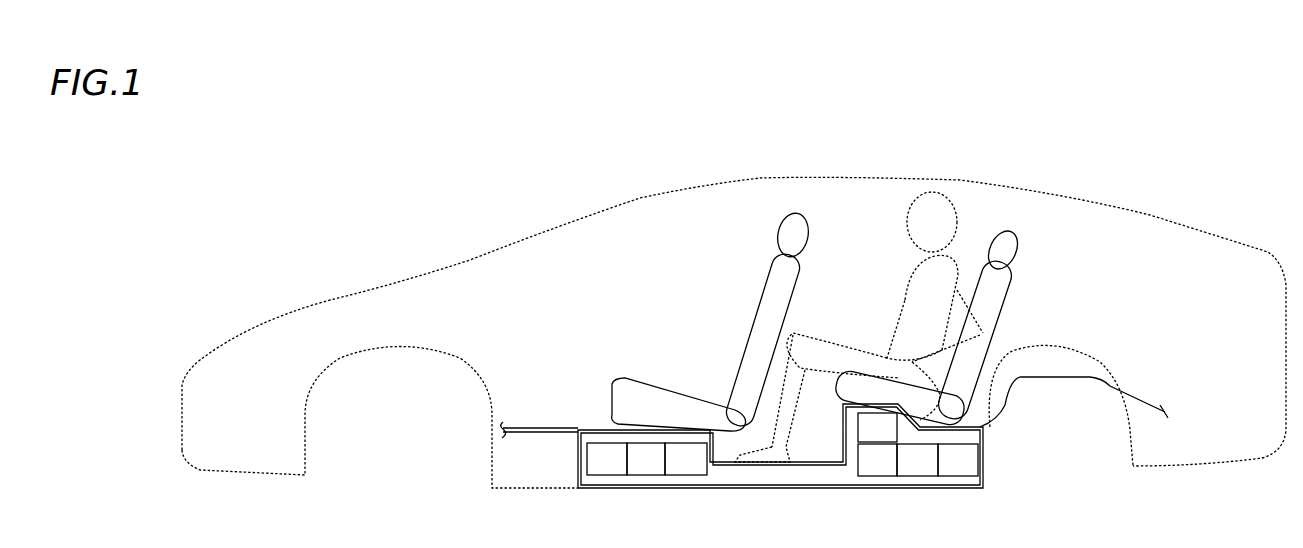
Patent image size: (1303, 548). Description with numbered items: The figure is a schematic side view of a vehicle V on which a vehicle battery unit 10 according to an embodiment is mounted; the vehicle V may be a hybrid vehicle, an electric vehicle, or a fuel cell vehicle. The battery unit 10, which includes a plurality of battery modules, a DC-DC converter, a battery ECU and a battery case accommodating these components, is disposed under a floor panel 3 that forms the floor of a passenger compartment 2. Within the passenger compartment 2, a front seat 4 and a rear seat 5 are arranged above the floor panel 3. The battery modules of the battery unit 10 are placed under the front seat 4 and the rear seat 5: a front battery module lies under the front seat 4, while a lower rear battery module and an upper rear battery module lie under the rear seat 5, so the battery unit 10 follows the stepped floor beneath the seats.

The vehicle V is at (1007, 172).
The passenger compartment 2 is at (871, 288).
The floor panel 3 is at (566, 429).
The front seat 4 is at (672, 381).
The rear seat 5 is at (985, 334).
The battery unit 10 is at (577, 466).